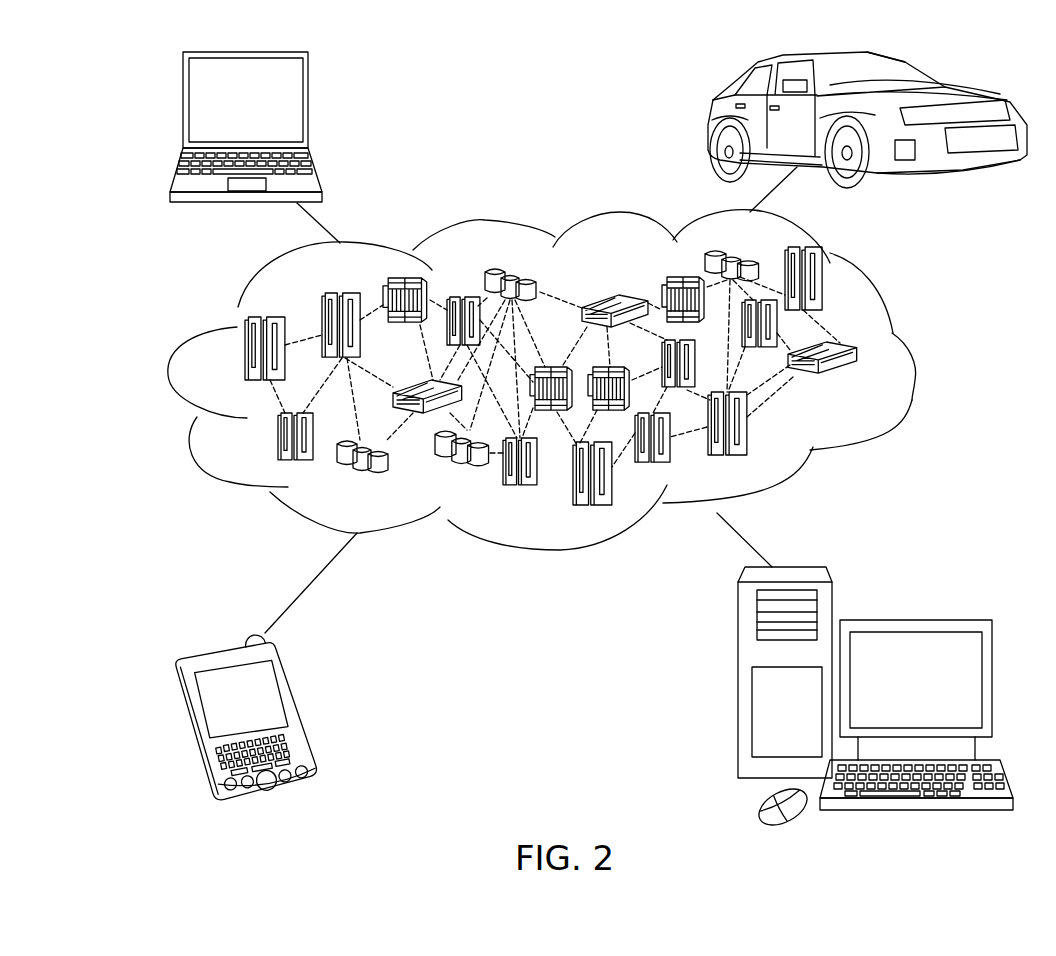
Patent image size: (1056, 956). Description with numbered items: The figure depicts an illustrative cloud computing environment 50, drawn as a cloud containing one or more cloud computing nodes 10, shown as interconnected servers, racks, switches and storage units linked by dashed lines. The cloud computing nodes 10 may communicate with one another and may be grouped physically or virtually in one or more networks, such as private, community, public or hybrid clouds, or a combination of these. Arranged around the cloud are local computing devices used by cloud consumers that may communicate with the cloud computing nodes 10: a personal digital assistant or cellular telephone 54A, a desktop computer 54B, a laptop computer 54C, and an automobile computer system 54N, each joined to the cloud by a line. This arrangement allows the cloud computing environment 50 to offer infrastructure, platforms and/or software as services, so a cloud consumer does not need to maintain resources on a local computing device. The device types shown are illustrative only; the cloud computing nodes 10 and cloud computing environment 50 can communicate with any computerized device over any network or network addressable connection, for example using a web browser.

The cloud computing node 10 is at (860, 383).
The cloud computing environment 50 is at (912, 353).
The personal digital assistant (PDA) or cellular telephone 54A is at (300, 708).
The desktop computer 54B is at (913, 620).
The laptop computer 54C is at (308, 107).
The automobile computer system 54N is at (710, 122).